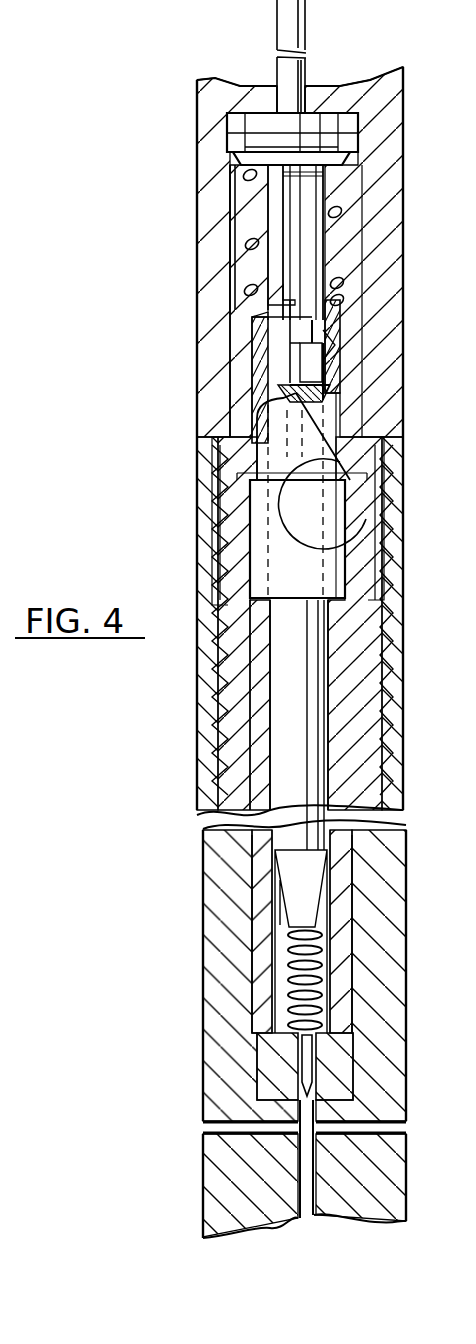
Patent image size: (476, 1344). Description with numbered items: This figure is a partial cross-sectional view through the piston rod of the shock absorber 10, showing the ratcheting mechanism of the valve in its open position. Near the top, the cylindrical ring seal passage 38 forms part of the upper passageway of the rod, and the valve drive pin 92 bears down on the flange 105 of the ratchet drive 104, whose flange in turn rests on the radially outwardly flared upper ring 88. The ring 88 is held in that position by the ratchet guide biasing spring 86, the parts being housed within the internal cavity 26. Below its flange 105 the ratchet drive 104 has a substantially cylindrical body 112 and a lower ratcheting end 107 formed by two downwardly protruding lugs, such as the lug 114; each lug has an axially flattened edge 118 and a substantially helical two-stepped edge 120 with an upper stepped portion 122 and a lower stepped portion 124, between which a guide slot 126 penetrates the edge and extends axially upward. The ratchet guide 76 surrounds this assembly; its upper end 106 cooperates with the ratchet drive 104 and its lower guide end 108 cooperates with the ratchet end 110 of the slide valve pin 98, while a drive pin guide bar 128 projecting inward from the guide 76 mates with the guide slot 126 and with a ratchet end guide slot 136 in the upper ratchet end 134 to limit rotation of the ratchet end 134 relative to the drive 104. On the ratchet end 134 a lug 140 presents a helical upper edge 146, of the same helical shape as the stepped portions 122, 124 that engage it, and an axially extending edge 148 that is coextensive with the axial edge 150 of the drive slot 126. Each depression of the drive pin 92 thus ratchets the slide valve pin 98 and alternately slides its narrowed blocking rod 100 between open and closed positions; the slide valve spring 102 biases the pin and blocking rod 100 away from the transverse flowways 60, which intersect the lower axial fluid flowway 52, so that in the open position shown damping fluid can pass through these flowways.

The shock absorber 10 is at (357, 57).
The internal cavity 26 is at (243, 268).
The cylindrical ring seal passage 38 is at (257, 98).
The lower axial fluid flowway 52 is at (305, 1178).
The transverse flowways 60 is at (392, 1125).
The ratchet guide 76 is at (345, 512).
The ratchet guide biasing spring 86 is at (342, 214).
The flared upper ring 88 is at (345, 153).
The valve drive pin 92 is at (290, 21).
The slide valve pin 98 is at (300, 720).
The blocking rod 100 is at (298, 1062).
The slide valve spring 102 is at (290, 958).
The ratchet drive 104 is at (310, 251).
The flange 105 is at (352, 133).
The upper end of ratchet guide 106 is at (330, 345).
The lower ratcheting end 107 is at (262, 260).
The lower guide end 108 is at (290, 464).
The ratchet end 110 is at (415, 447).
The cylindrical body 112 is at (273, 214).
The lug 114 is at (290, 297).
The axially flattened edge 118 is at (250, 313).
The helical two-stepped edge 120 is at (330, 307).
The upper stepped portion 122 is at (344, 300).
The lower stepped portion 124 is at (320, 376).
The guide slot 126 is at (292, 180).
The drive pin guide bar 128 is at (378, 498).
The upper ratchet end 134 is at (383, 543).
The ratchet end guide slot 136 is at (325, 400).
The lug 140 is at (300, 350).
The helical upper edge 146 is at (290, 327).
The axially extending edge 148 is at (290, 380).
The axial edge of drive slot 150 is at (255, 178).